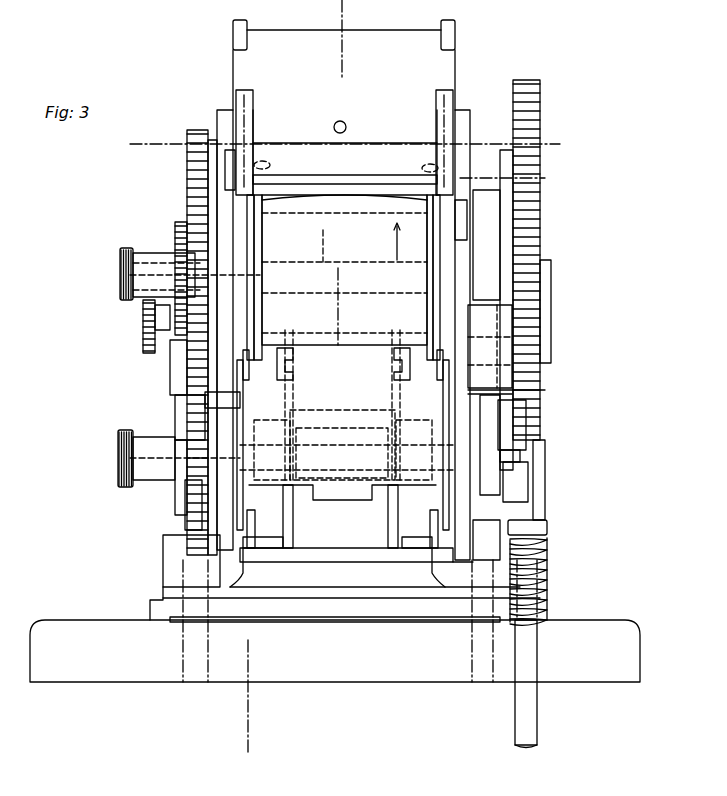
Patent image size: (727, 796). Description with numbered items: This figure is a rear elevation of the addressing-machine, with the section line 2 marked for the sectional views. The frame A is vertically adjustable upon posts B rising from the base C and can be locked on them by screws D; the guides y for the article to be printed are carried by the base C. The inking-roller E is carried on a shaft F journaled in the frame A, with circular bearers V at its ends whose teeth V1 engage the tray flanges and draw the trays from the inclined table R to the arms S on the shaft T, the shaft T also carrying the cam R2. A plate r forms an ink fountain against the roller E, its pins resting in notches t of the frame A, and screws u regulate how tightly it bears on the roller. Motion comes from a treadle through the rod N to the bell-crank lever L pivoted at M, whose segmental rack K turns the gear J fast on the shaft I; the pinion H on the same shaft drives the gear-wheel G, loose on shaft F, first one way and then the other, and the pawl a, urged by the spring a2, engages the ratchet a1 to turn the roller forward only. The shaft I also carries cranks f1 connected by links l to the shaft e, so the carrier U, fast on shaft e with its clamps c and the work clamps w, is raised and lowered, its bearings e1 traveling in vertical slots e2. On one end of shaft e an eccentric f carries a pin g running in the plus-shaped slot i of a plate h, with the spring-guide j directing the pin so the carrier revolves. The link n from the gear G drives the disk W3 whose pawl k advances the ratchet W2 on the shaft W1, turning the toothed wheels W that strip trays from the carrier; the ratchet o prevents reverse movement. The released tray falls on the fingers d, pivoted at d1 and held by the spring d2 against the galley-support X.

The inclined table R is at (296, 38).
The frame A is at (222, 112).
The links l is at (246, 90).
The crank f1 is at (255, 133).
The shaft I is at (356, 143).
The screws u is at (264, 164).
The plate r is at (350, 185).
The inking-roller E is at (344, 270).
The shaft F is at (317, 246).
The shaft T is at (352, 306).
The teeth V1 is at (258, 282).
The circular bearers V is at (258, 306).
The clamps c is at (250, 372).
The slot i is at (246, 386).
The arms S is at (296, 372).
The carrier U is at (346, 428).
The shaft e is at (342, 435).
The bearings e1 is at (343, 437).
The toothed wheels W is at (380, 425).
The fingers d is at (250, 515).
The pivot d1 is at (252, 538).
The spring d2 is at (438, 553).
The galley-support X is at (312, 558).
The vertical slots e2 is at (337, 574).
The pinion H is at (190, 152).
The posts B is at (190, 195).
The gear-wheel G is at (192, 222).
The ratchet a1 is at (178, 256).
The spring a2 is at (178, 293).
The pawl a is at (165, 308).
The screws D is at (142, 345).
The cam R2 is at (185, 370).
The link n is at (180, 396).
The ratchet o is at (230, 400).
The shaft W1 is at (145, 437).
The ratchet W2 is at (175, 457).
The pawl k is at (176, 510).
The disk W3 is at (186, 527).
The clamps w is at (195, 536).
The guides y is at (160, 603).
The notches t is at (342, 195).
The gear J is at (540, 88).
The bell-crank lever L is at (550, 302).
The pivot M is at (545, 334).
The segmental rack K is at (520, 385).
The eccentric or crank f is at (500, 410).
The pin g is at (522, 460).
The spring-guide j is at (522, 506).
The plate h is at (547, 522).
The rod N is at (535, 566).
The base C is at (385, 680).
The section line 2 is at (247, 772).